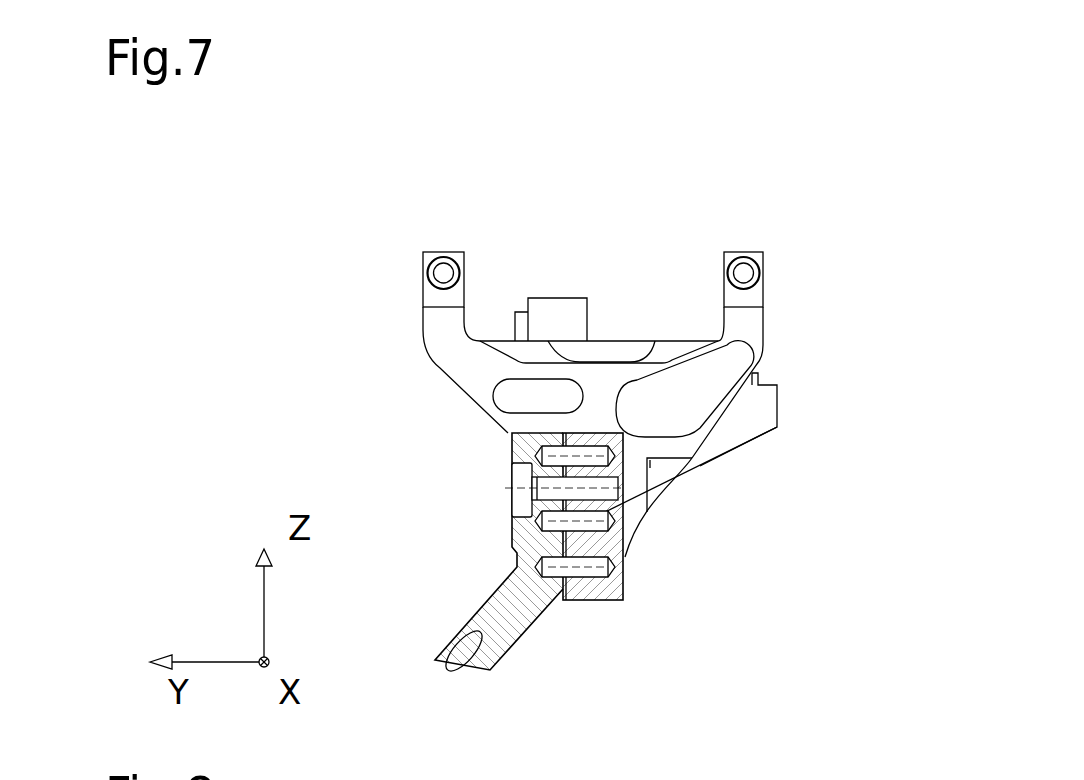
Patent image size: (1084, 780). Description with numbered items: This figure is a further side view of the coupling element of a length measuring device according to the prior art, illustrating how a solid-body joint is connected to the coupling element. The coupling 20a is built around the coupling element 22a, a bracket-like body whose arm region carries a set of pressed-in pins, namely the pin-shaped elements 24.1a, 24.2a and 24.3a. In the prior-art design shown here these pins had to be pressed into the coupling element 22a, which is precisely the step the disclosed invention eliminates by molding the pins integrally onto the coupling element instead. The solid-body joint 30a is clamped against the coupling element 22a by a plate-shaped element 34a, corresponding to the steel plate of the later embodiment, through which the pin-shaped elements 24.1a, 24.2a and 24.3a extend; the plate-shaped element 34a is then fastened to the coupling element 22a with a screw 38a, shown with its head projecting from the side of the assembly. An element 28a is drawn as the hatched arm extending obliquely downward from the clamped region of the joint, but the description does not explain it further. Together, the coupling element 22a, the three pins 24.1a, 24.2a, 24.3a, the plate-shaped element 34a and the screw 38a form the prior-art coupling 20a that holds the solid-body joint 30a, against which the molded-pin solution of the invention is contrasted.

The coupling 20a is at (499, 404).
The coupling element 22a is at (445, 340).
The pin-shaped element 24.1a is at (627, 507).
The pin-shaped element 24.2a is at (600, 453).
The pin-shaped element 24.3a is at (593, 572).
The holding arm 28a is at (503, 603).
The solid-body joint 30a is at (592, 602).
The plate-shaped element 34a is at (572, 587).
The screw 38a is at (478, 490).